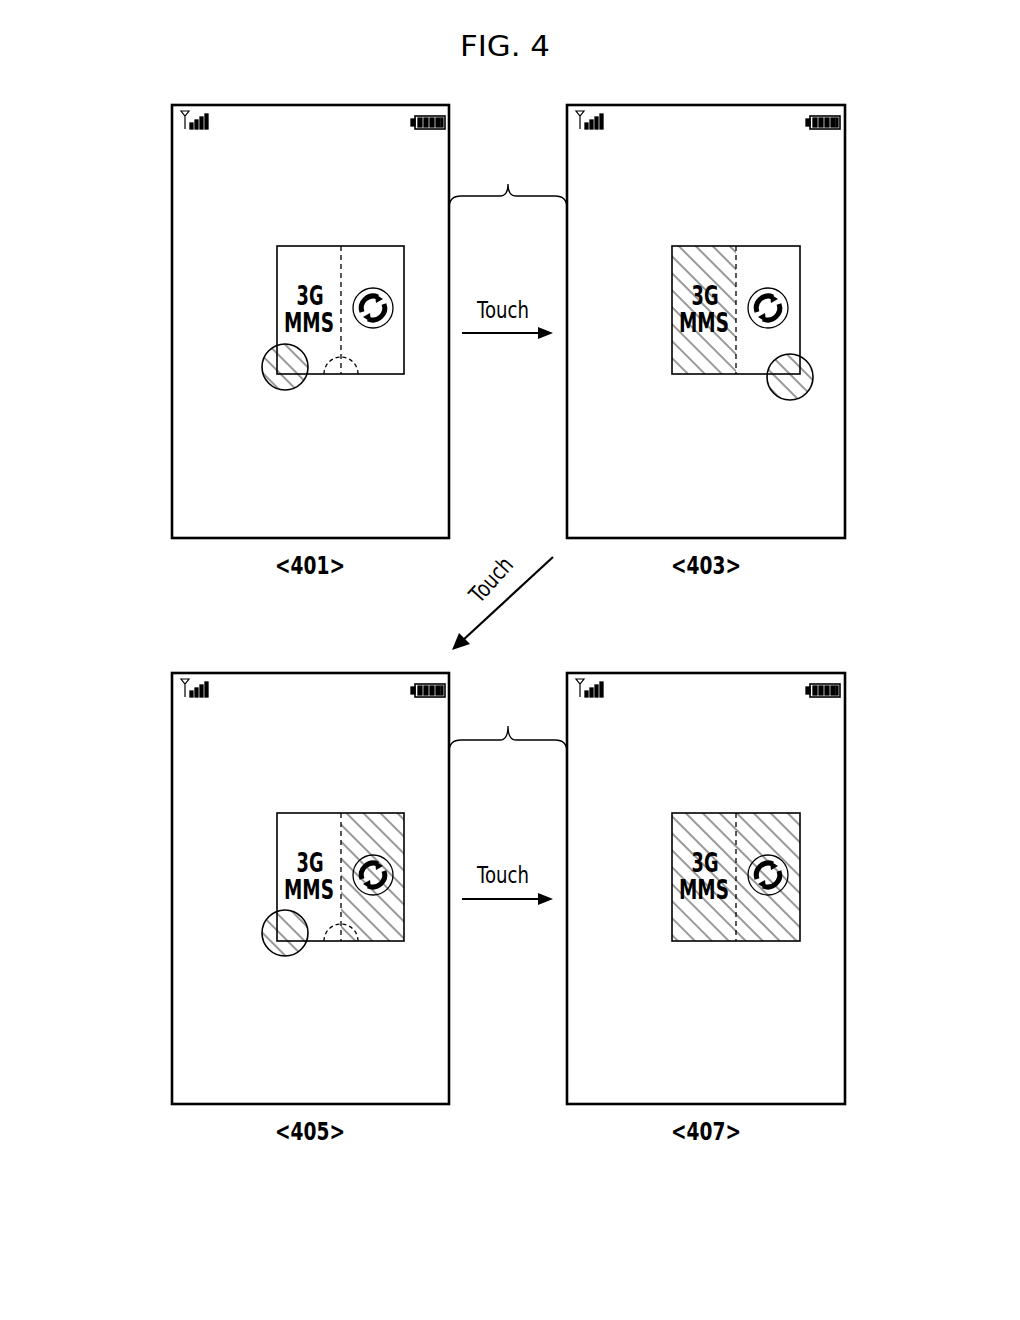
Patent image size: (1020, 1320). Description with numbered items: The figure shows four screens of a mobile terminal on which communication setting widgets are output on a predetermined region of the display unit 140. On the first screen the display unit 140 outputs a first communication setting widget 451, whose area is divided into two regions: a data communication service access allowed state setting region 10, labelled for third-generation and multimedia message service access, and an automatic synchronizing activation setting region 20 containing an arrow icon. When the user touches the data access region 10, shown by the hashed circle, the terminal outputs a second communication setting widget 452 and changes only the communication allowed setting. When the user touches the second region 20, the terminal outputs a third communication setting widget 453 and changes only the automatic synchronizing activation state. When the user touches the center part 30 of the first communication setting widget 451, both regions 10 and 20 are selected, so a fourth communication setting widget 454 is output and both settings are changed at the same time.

The data communication service access allowed state setting region 10 is at (277, 272).
The automatic synchronizing activation setting region 20 is at (384, 360).
The center part 30 is at (337, 392).
The display unit 140 is at (508, 452).
The first communication setting widget 451 is at (342, 244).
The second communication setting widget 452 is at (737, 244).
The third communication setting widget 453 is at (342, 811).
The fourth communication setting widget 454 is at (737, 811).